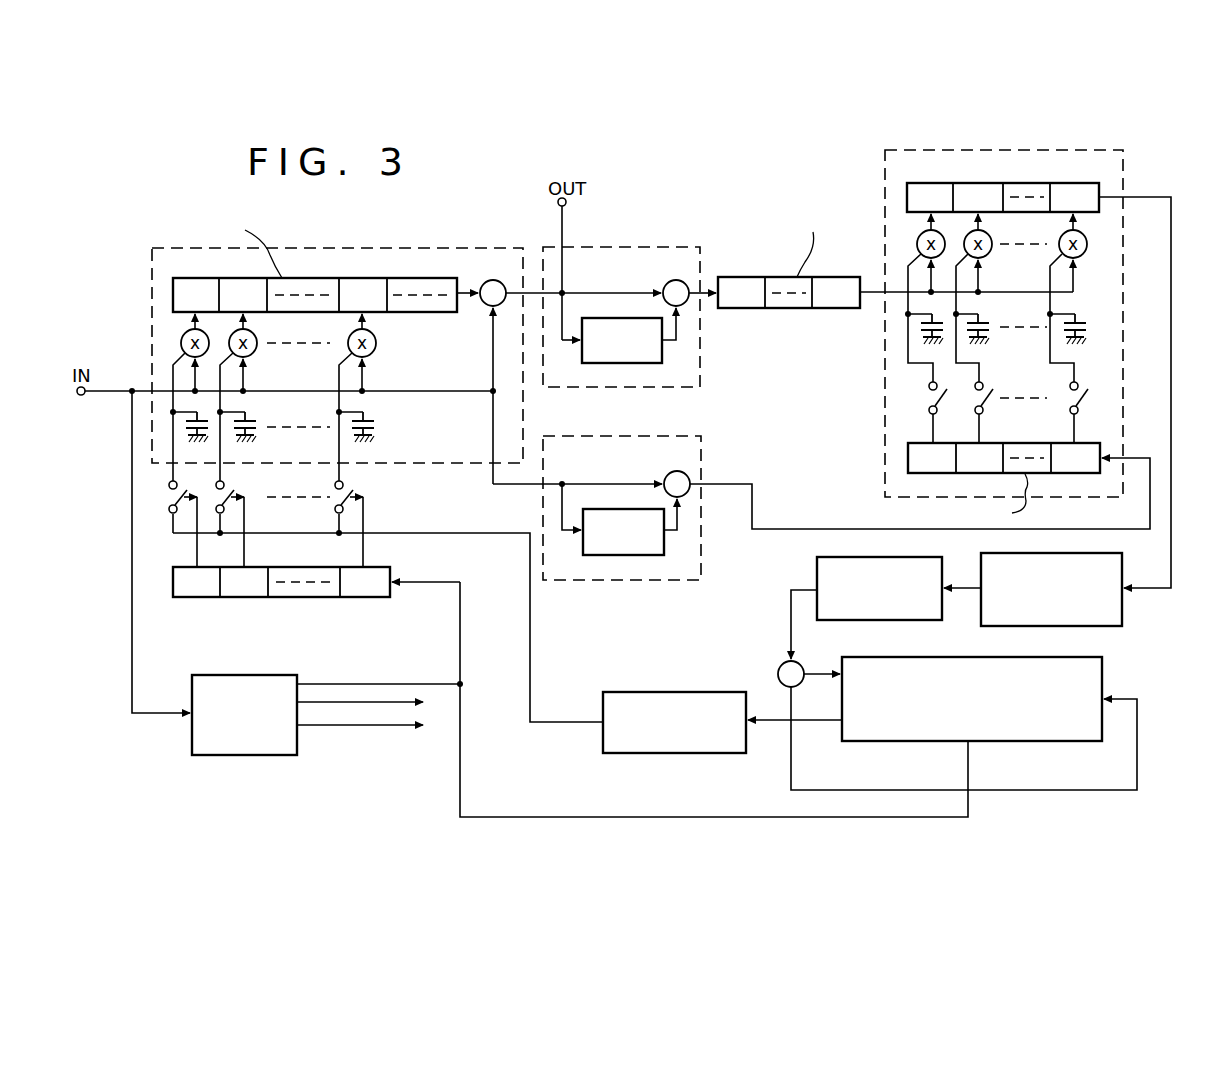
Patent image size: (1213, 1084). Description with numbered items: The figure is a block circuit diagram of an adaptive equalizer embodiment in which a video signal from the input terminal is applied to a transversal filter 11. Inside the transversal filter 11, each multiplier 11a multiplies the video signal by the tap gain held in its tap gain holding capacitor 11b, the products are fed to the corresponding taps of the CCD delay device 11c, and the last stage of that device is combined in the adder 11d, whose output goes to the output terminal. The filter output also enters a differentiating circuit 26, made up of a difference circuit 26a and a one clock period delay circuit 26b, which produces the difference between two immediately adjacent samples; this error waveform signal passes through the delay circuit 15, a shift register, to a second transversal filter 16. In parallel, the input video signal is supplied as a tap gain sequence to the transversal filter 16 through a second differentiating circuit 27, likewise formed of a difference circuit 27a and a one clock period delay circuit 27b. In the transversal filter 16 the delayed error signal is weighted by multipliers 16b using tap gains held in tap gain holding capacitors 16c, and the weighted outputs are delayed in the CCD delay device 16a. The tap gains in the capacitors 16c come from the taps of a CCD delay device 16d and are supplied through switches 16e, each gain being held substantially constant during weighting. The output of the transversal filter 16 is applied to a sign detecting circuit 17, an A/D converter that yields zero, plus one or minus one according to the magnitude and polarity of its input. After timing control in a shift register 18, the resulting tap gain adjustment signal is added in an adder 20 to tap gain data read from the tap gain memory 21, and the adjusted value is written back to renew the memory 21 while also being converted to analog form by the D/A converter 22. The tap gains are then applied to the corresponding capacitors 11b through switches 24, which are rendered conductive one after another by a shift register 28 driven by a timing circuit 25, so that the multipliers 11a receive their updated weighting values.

The transversal filter 11 is at (343, 248).
The multiplier 11a is at (253, 353).
The tap gain holding capacitor 11b is at (381, 410).
The CCD delay device 11c is at (305, 280).
The adder 11d is at (484, 283).
The delay circuit 15 is at (784, 277).
The transversal filter 16 is at (995, 150).
The CCD delay device 16a is at (967, 184).
The multipliers 16b is at (988, 254).
The tap gain holding capacitors 16c is at (990, 326).
The CCD delay device 16d is at (1021, 443).
The switches 16e is at (990, 404).
The sign detecting circuit 17 is at (1123, 572).
The shift register 18 is at (815, 570).
The adder 20 is at (782, 667).
The tap gain memory 21 is at (950, 742).
The D/A converter 22 is at (672, 754).
The switches 24 is at (357, 488).
The timing circuit 25 is at (236, 675).
The differentiating circuit 26 is at (672, 247).
The difference circuit 26a is at (668, 282).
The one clock period delay circuit 26b is at (636, 364).
The differentiating circuit 27 is at (701, 455).
The difference circuit 27a is at (687, 495).
The one clock period delay circuit 27b is at (645, 556).
The shift register 28 is at (384, 567).